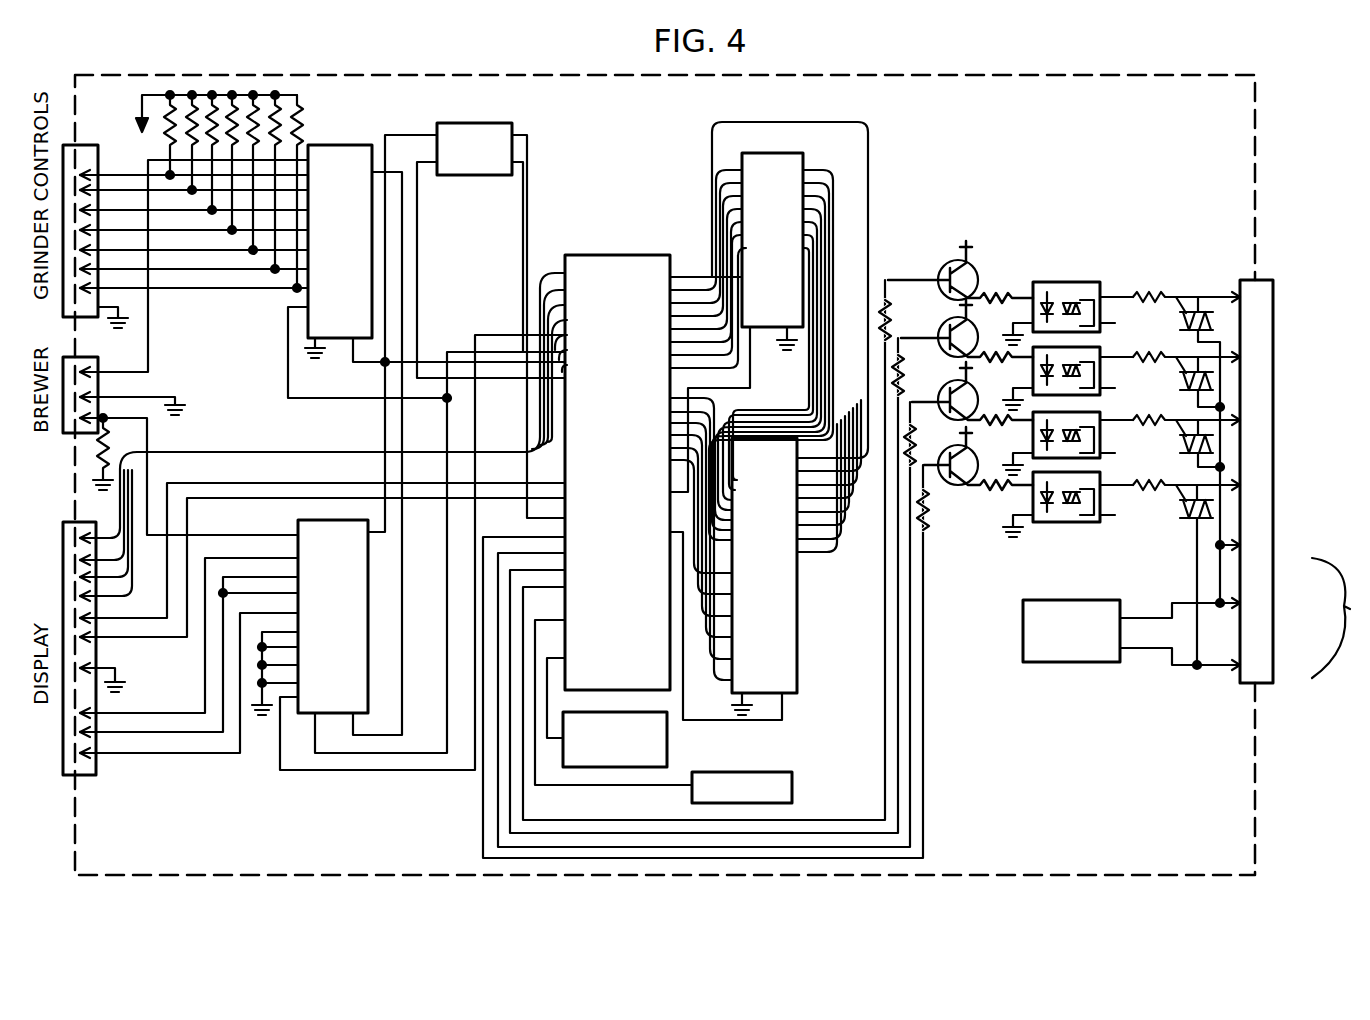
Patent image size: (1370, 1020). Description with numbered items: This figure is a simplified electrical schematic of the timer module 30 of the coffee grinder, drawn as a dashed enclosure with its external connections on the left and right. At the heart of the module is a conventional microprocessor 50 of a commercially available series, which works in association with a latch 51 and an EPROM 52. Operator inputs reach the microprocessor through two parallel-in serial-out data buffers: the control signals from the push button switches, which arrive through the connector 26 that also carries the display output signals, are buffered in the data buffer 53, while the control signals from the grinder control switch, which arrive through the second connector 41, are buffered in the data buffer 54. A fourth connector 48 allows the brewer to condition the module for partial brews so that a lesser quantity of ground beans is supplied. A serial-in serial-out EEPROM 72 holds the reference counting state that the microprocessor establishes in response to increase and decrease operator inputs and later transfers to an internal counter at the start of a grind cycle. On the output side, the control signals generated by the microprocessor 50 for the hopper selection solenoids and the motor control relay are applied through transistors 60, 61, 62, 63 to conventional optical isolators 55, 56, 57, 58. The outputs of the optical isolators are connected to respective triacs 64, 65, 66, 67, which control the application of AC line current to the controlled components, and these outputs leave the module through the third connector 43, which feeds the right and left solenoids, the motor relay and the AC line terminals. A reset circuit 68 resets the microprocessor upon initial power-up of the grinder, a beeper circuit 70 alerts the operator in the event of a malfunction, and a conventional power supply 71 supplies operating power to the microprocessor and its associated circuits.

The connector 26 is at (76, 776).
The timer module 30 is at (1255, 752).
The second connector 41 is at (78, 145).
The third connector 43 is at (1245, 683).
The fourth connector 48 is at (80, 352).
The microprocessor 50 is at (608, 255).
The latch 51 is at (798, 153).
The EPROM 52 is at (797, 612).
The parallel-in serial-out data buffer 53 is at (298, 520).
The parallel-in serial-out data buffer 54 is at (335, 145).
The optical isolator 55 is at (1056, 282).
The optical isolator 56 is at (1100, 405).
The optical isolator 57 is at (1100, 467).
The optical isolator 58 is at (1052, 522).
The transistor 60 is at (943, 266).
The transistor 61 is at (948, 322).
The transistor 62 is at (948, 385).
The transistor 63 is at (957, 486).
The triac 64 is at (1178, 314).
The triac 65 is at (1178, 380).
The triac 66 is at (1180, 444).
The triac 67 is at (1179, 502).
The reset circuit 68 is at (667, 731).
The beeper circuit 70 is at (792, 786).
The power supply 71 is at (1080, 663).
The EEPROM 72 is at (507, 123).